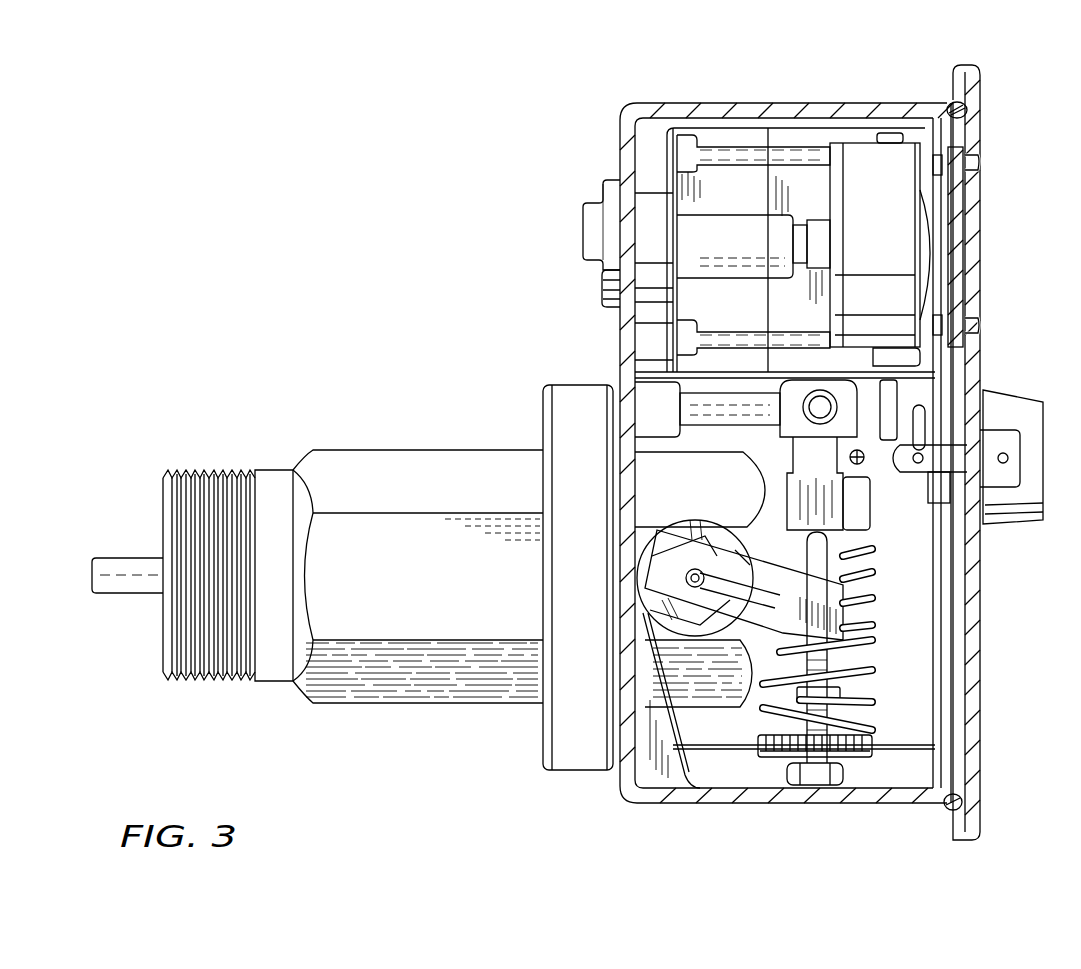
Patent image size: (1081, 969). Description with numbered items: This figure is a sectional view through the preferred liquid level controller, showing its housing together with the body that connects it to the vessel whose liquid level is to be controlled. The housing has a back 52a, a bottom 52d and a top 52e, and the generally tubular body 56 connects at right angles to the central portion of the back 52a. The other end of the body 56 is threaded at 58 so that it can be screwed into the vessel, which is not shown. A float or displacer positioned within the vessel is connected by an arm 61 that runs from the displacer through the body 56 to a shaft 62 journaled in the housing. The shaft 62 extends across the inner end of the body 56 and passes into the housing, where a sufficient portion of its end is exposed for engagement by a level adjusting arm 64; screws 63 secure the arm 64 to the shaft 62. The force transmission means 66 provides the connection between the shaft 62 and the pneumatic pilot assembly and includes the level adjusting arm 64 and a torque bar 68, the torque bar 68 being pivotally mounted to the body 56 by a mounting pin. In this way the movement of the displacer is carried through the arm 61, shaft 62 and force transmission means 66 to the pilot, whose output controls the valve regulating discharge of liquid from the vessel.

The back 52a is at (620, 343).
The bottom 52d is at (779, 807).
The top 52e is at (787, 103).
The body 56 is at (410, 450).
The threaded end 58 is at (207, 470).
The arm 61 is at (126, 558).
The shaft 62 is at (640, 590).
The screws 63 is at (700, 522).
The level adjusting arm 64 is at (652, 540).
The force transmission means 66 is at (893, 540).
The torque bar 68 is at (832, 497).